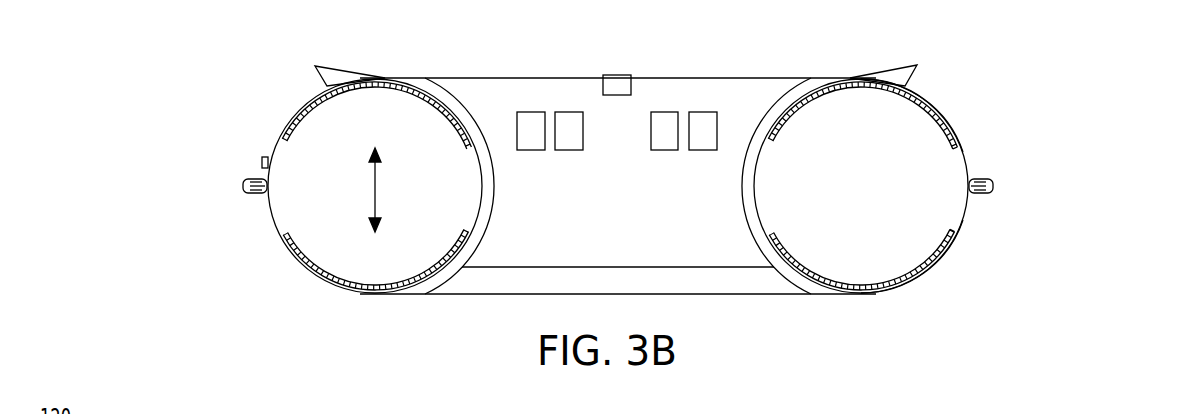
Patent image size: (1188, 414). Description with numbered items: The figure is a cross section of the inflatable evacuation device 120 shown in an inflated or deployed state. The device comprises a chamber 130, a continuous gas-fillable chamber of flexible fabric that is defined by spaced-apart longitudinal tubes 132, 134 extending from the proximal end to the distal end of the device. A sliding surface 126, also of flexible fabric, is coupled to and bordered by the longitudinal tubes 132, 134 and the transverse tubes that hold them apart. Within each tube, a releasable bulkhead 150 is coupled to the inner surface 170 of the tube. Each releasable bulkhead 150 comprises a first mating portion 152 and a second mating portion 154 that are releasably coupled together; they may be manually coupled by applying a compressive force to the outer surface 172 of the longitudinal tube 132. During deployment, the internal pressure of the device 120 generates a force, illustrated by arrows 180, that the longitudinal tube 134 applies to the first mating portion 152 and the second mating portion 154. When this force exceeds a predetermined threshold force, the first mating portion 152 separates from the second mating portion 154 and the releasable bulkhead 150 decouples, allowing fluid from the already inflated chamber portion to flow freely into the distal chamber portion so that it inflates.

The inflatable evacuation device 120 is at (175, 108).
The sliding surface 126 is at (595, 108).
The chamber 130 is at (790, 202).
The longitudinal tube 132 is at (757, 227).
The longitudinal tube 134 is at (262, 207).
The releasable bulkhead 150 is at (1090, 152).
The first mating portion 152 is at (963, 152).
The second mating portion 154 is at (960, 237).
The inner surface 170 is at (757, 158).
The outer surface 172 is at (927, 100).
The arrows 180 is at (380, 197).